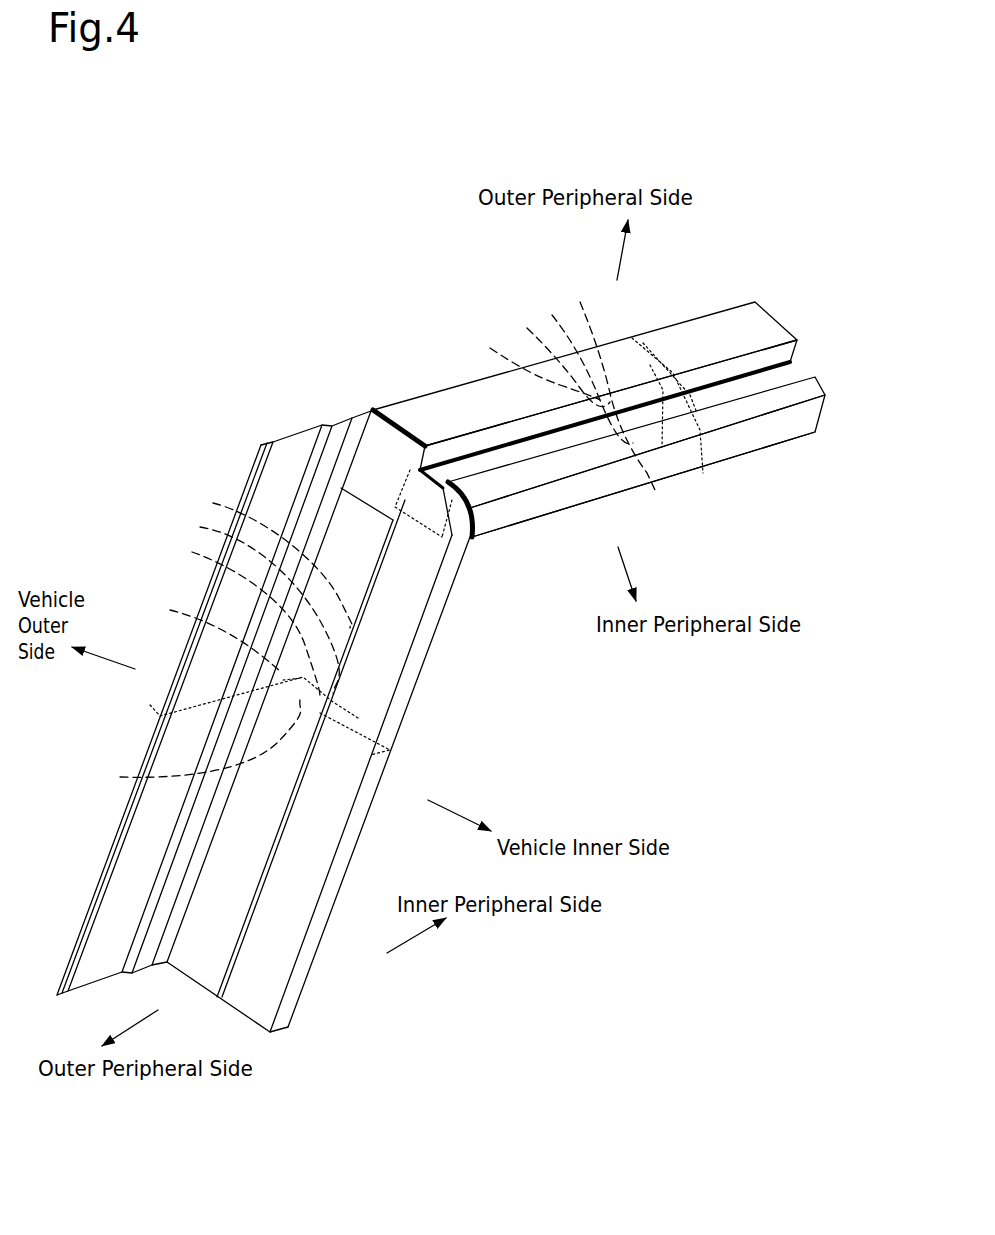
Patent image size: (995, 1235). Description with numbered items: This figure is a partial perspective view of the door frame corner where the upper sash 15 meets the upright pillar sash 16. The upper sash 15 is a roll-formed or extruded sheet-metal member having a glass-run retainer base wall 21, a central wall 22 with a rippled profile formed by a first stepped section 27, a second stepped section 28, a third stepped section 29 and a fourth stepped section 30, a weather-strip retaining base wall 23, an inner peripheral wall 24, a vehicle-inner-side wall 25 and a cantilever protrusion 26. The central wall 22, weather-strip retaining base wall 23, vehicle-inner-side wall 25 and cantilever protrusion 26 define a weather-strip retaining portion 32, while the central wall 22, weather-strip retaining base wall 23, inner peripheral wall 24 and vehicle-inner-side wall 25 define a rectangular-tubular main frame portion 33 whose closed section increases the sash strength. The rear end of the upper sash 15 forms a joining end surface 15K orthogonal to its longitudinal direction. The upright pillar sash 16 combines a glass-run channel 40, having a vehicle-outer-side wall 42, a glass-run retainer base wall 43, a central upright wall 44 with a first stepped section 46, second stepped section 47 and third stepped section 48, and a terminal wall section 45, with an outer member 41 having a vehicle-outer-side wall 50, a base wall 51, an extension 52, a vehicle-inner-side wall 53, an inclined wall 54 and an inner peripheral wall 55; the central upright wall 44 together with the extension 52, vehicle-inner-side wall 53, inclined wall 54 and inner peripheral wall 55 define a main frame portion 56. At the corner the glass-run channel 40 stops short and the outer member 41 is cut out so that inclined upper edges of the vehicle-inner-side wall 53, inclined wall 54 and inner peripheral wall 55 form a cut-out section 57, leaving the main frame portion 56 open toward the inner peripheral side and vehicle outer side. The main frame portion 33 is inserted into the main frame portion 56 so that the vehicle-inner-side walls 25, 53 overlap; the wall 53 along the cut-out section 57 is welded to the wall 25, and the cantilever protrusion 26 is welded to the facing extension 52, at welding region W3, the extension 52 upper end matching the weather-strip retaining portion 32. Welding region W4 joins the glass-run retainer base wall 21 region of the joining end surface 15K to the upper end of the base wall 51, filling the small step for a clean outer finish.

The upper sash 15 is at (716, 282).
The upright pillar sash 16 is at (85, 713).
The glass-run retainer base wall 21 is at (682, 333).
The central wall 22 is at (578, 263).
The weather-strip retaining base wall 23 is at (636, 497).
The inner peripheral wall 24 is at (673, 460).
The vehicle-inner-side wall 25 is at (597, 482).
The cantilever protrusion 26 is at (770, 402).
The first stepped section 27 is at (609, 386).
The second stepped section 28 is at (584, 369).
The third stepped section 29 is at (558, 358).
The fourth stepped section 30 is at (537, 363).
The weather-strip retaining portion 32 is at (792, 366).
The main frame portion 33 is at (735, 463).
The glass-run channel 40 is at (281, 698).
The outer member 41 is at (140, 745).
The vehicle-outer-side wall 42 is at (216, 628).
The glass-run retainer base wall 43 is at (196, 752).
The central upright wall 44 is at (186, 563).
The terminal wall section 45 is at (360, 708).
The first stepped section 46 is at (243, 620).
The second stepped section 47 is at (256, 603).
The third stepped section 48 is at (271, 557).
The vehicle-outer-side wall 50 is at (200, 687).
The base wall 51 is at (368, 472).
The extension 52 is at (382, 657).
The vehicle-inner-side wall 53 is at (360, 827).
The inclined wall 54 is at (380, 725).
The inner peripheral wall 55 is at (424, 734).
The main frame portion 56 is at (324, 941).
The cut-out section 57 is at (478, 518).
The welding region W3 is at (473, 520).
The welding region W4 is at (402, 430).
The joining end surface 15K is at (439, 547).